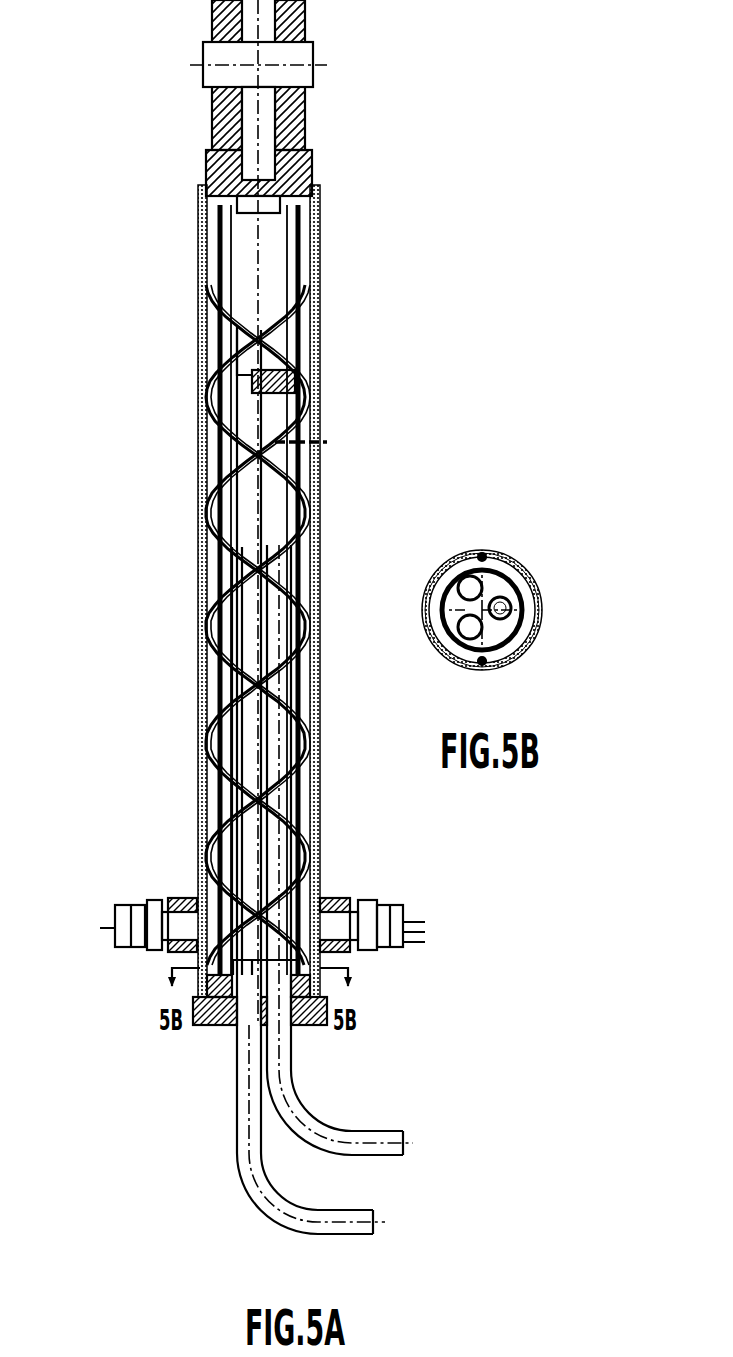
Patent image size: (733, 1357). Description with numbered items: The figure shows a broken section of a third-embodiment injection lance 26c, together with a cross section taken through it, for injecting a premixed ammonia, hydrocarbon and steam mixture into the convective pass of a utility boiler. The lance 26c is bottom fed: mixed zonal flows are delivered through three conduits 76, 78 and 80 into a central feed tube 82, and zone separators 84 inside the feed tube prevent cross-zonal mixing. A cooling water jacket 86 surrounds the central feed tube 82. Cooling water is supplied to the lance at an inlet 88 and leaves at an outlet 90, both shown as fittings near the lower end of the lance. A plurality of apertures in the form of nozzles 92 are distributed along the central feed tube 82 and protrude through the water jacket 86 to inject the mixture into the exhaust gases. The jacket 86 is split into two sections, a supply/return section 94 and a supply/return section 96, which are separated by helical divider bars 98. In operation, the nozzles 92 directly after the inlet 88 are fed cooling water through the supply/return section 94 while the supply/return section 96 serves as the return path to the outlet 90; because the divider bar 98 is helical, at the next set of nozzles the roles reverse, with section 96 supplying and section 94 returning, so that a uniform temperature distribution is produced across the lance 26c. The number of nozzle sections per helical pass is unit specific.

In FIG. 5A, the lance 26c is at (322, 243).
In FIG. 5B, the lance 26c is at (540, 570).
In FIG. 5A, the conduit 76 is at (236, 1070).
In FIG. 5B, the conduit 76 is at (520, 625).
In FIG. 5A, the conduit 78 is at (262, 705).
In FIG. 5B, the conduit 78 is at (462, 665).
In FIG. 5A, the conduit 80 is at (207, 590).
In FIG. 5B, the conduit 80 is at (458, 560).
In FIG. 5A, the central feed tube 82 is at (216, 783).
In FIG. 5B, the central feed tube 82 is at (442, 630).
In FIG. 5A, the zone separator 84 is at (295, 387).
In FIG. 5A, the cooling water jacket 86 is at (214, 505).
In FIG. 5B, the cooling water jacket 86 is at (520, 655).
In FIG. 5A, the inlet 88 is at (113, 930).
In FIG. 5A, the outlet 90 is at (410, 950).
In FIG. 5A, the nozzle 92 is at (330, 441).
In FIG. 5B, the nozzle 92 is at (505, 560).
In FIG. 5B, the supply/return section 94 is at (425, 600).
In FIG. 5B, the supply/return section 96 is at (538, 603).
In FIG. 5A, the helical divider bar 98 is at (215, 398).
In FIG. 5B, the helical divider bar 98 is at (478, 550).